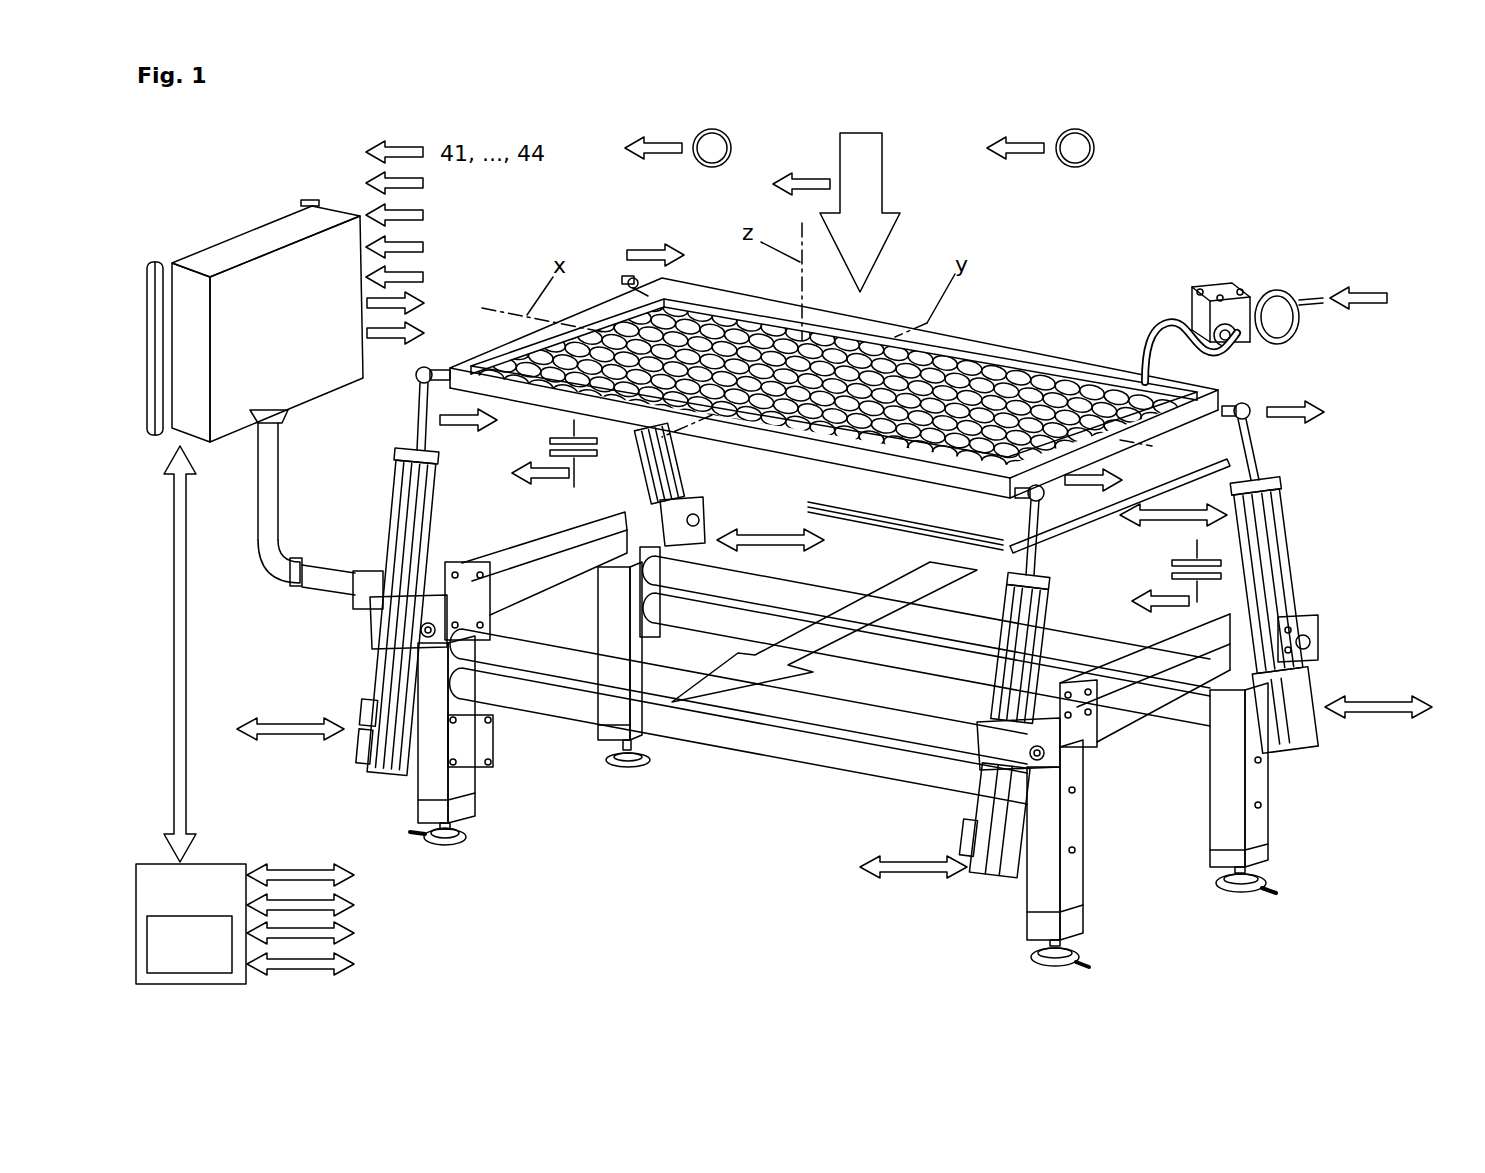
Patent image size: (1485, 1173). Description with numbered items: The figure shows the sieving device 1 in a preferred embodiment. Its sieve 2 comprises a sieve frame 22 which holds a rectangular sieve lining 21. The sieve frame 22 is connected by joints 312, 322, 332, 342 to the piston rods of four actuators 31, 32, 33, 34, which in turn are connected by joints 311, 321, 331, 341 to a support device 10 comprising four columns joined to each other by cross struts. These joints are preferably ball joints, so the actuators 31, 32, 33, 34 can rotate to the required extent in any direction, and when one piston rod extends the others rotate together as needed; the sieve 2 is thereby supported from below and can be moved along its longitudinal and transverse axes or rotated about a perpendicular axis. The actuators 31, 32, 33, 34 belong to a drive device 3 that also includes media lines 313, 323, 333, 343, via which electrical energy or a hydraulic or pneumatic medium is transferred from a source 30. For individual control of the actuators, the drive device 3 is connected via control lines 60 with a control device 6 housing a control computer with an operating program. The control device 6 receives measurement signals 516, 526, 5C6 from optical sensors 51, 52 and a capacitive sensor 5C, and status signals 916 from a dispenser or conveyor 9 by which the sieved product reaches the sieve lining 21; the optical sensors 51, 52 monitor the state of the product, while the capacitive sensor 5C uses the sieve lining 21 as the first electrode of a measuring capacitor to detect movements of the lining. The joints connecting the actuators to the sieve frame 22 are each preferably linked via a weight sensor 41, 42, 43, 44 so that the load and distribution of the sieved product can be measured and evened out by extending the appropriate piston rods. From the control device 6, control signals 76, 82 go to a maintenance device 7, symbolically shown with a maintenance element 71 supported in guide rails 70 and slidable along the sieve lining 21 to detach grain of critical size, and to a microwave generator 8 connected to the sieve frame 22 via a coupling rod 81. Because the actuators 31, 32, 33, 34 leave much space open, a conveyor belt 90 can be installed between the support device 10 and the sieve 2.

The sieving device 1 is at (1140, 307).
The sieve 2 is at (840, 408).
The sieve lining 21 is at (1017, 342).
The sieve frame 22 is at (978, 338).
The drive device 3 is at (191, 924).
The source 30 is at (189, 944).
The actuator 31 is at (710, 726).
The joint 311 is at (1046, 740).
The joint 312 is at (1048, 505).
The media line 313 is at (607, 862).
The actuator 32 is at (375, 645).
The joint 321 is at (373, 633).
The joint 322 is at (420, 378).
The media line 323 is at (321, 807).
The actuator 33 is at (535, 572).
The joint 331 is at (715, 517).
The joint 332 is at (623, 278).
The media line 333 is at (582, 495).
The actuator 34 is at (839, 662).
The joint 341 is at (1312, 622).
The joint 342 is at (1257, 392).
The media line 343 is at (839, 825).
The weight sensor 41 is at (1106, 482).
The weight sensor 42 is at (468, 434).
The weight sensor 43 is at (675, 256).
The weight sensor 44 is at (1316, 413).
The capacitive sensor 5C is at (876, 515).
The measurement signal 5C6 is at (770, 454).
The optical sensor 51 is at (733, 132).
The measurement signal 516 is at (524, 182).
The optical sensor 52 is at (1098, 133).
The measurement signal 526 is at (705, 198).
The control device 6 is at (229, 222).
The control line 60 is at (196, 654).
The maintenance device 7 is at (1120, 520).
The maintenance element 71 is at (1108, 514).
The guide rail 70 is at (900, 522).
The control signal 76 is at (797, 424).
The microwave generator 8 is at (1220, 310).
The coupling rod 81 is at (1145, 348).
The control signal 82 is at (880, 317).
The dispenser or conveyor 9 is at (860, 212).
The conveyor belt 90 is at (824, 632).
The status signal 916 is at (599, 170).
The support device 10 is at (770, 742).